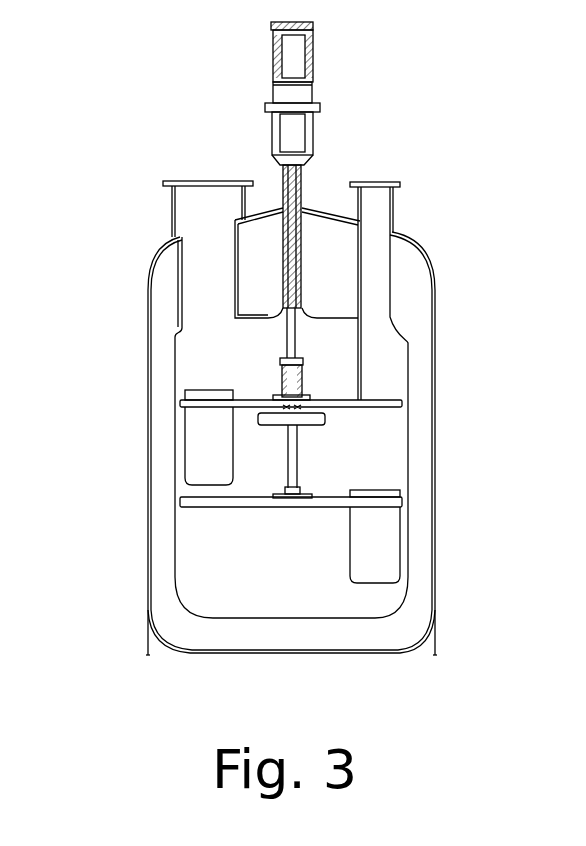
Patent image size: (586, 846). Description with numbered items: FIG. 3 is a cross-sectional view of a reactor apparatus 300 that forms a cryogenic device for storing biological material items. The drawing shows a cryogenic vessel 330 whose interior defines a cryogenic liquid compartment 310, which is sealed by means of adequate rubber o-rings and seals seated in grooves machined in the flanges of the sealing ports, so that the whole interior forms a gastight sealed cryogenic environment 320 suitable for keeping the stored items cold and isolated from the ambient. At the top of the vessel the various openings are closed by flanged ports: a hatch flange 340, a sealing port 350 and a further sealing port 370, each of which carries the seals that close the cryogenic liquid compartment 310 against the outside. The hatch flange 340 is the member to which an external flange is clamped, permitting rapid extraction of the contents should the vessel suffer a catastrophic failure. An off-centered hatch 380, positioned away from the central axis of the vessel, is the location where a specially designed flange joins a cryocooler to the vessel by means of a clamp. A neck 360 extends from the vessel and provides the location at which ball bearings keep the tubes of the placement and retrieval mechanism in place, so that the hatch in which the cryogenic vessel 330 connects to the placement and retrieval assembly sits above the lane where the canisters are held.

The reactor apparatus 300 is at (104, 66).
The cryogenic liquid compartment 310 is at (175, 435).
The gastight sealed cryogenic environment 320 is at (222, 367).
The cryogenic vessel 330 is at (190, 215).
The hatch flange 340 is at (163, 182).
The sealing port 350 is at (268, 105).
The neck 360 is at (312, 125).
The sealing port 370 is at (397, 183).
The off-centered hatch 380 is at (377, 215).